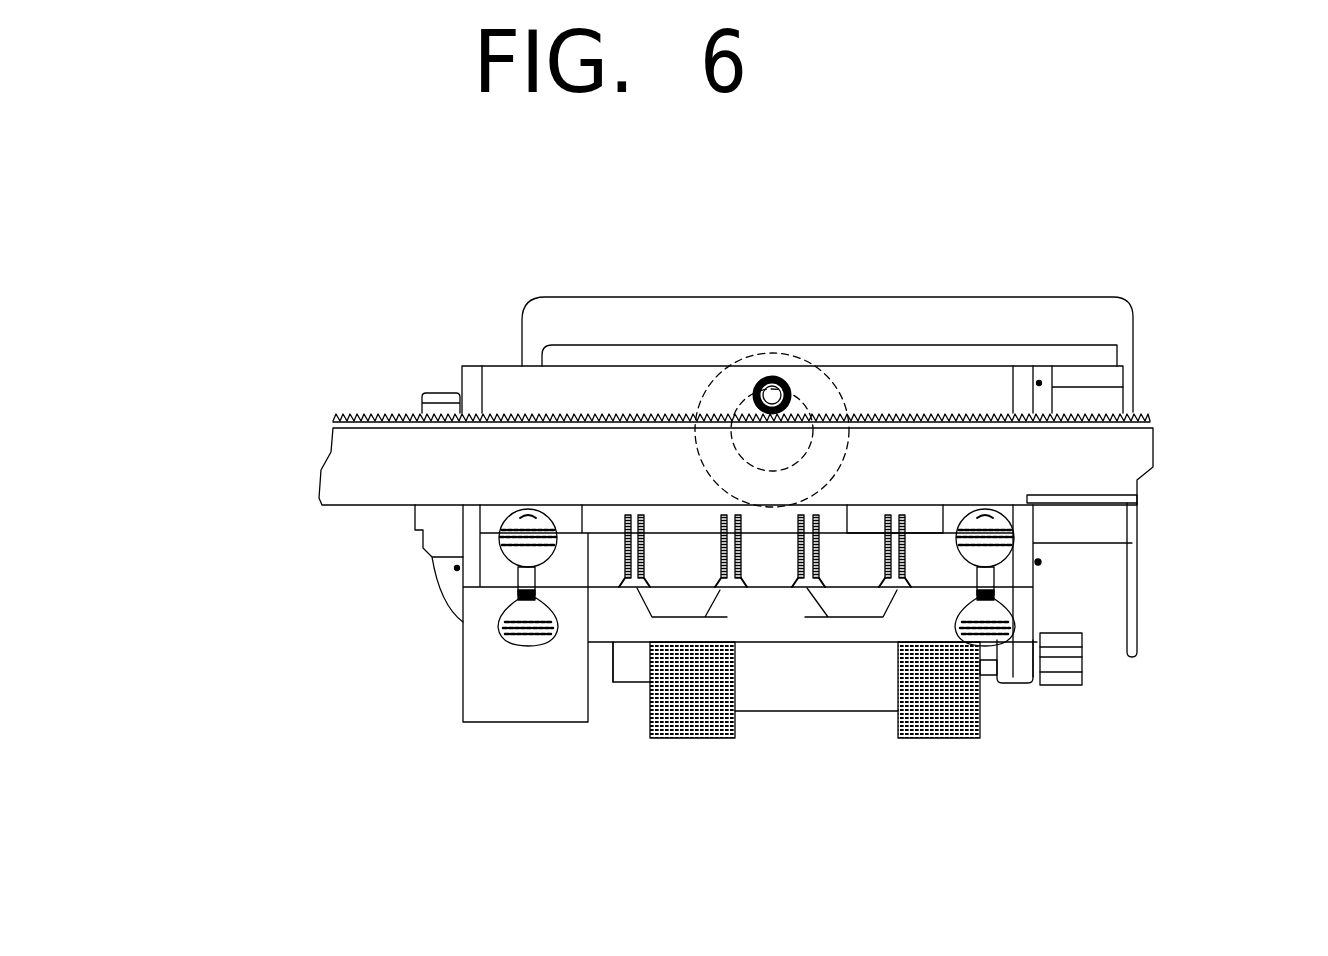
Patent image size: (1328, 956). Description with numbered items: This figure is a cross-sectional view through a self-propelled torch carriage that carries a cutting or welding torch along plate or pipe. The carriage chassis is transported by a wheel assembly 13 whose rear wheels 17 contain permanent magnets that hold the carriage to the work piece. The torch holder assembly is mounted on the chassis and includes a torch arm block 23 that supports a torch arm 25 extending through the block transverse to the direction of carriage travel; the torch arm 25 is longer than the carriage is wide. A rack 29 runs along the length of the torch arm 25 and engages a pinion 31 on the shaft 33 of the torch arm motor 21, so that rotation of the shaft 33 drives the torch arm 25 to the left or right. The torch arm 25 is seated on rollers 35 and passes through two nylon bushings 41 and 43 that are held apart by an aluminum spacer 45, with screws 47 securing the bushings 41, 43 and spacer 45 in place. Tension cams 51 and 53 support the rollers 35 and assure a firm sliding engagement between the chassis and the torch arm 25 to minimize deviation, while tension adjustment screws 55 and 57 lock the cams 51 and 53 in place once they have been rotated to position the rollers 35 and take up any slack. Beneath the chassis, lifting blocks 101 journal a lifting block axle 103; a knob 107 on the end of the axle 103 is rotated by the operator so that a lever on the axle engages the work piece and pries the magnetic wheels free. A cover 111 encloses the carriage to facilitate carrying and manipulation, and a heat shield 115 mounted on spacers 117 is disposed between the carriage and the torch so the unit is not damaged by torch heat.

The wheel assembly 13 is at (830, 705).
The rear wheels 17 is at (692, 740).
The torch arm motor 21 is at (720, 388).
The torch arm block 23 is at (440, 397).
The torch arm 25 is at (355, 485).
The rack 29 is at (358, 423).
The pinion 31 is at (757, 380).
The torch arm motor shaft 33 is at (780, 385).
The rollers 35 is at (507, 507).
The nylon bushing 41 is at (882, 500).
The nylon bushing 43 is at (620, 512).
The aluminum spacer 45 is at (722, 508).
The screws 47 is at (767, 617).
The tension cam 51 is at (515, 570).
The tension cam 53 is at (1140, 497).
The tension adjustment screw 55 is at (510, 643).
The tension adjustment screw 57 is at (1013, 618).
The lifting blocks 101 is at (633, 685).
The lifting block axle 103 is at (988, 677).
The knob 107 is at (1068, 678).
The cover 111 is at (995, 320).
The heat shield 115 is at (1137, 397).
The spacers 117 is at (1115, 522).